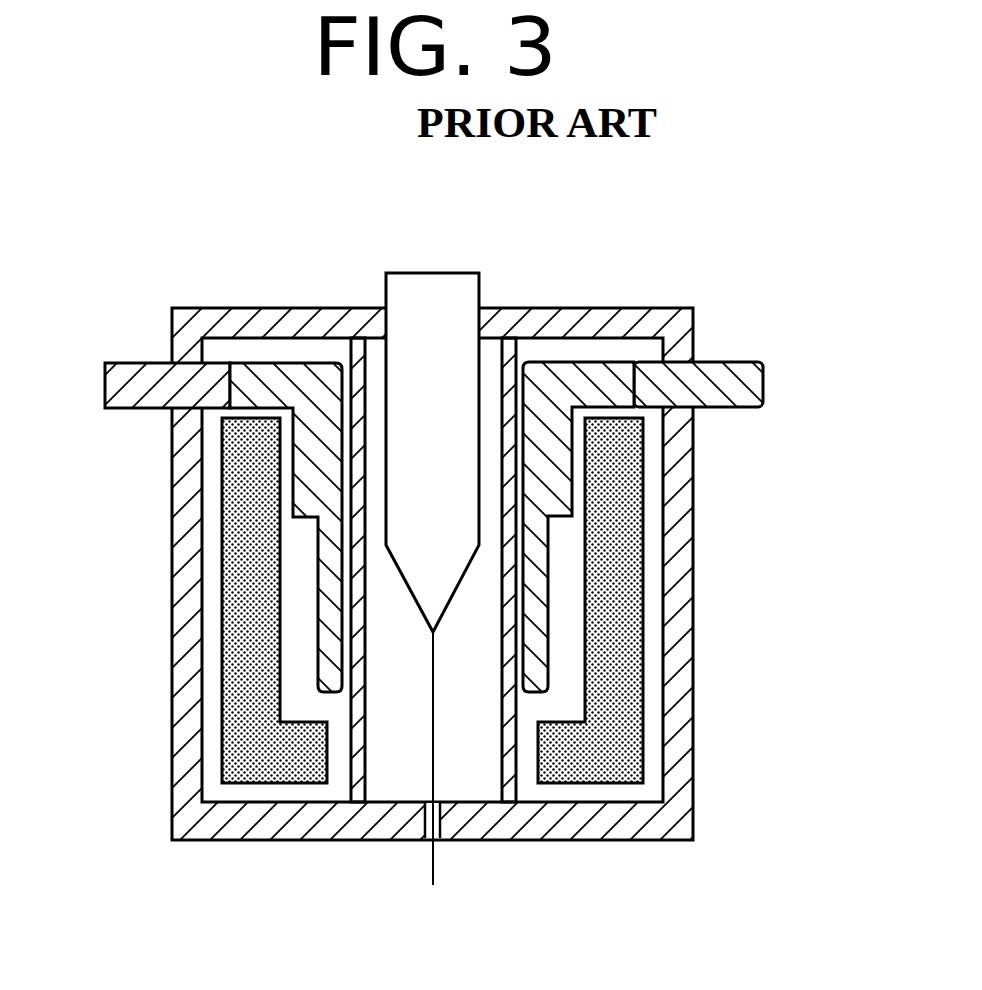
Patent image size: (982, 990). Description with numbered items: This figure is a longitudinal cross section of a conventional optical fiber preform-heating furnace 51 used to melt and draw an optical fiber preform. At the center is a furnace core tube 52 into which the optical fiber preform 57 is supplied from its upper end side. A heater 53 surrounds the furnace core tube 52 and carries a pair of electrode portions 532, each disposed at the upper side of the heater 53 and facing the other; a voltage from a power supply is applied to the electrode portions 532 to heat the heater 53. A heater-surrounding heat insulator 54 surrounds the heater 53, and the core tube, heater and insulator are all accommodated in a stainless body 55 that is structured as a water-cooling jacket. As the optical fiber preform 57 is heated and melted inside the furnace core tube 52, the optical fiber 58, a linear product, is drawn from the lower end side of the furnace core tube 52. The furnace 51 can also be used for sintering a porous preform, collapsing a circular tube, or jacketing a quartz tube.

The optical fiber preform-heating furnace 51 is at (150, 307).
The furnace core tube 52 is at (510, 648).
The heater 53 is at (558, 493).
The heater-surrounding heat insulator 54 is at (240, 535).
The stainless body 55 is at (178, 758).
The optical fiber preform 57 is at (448, 348).
The optical fiber 58 is at (435, 748).
The electrode portions 532 is at (740, 407).